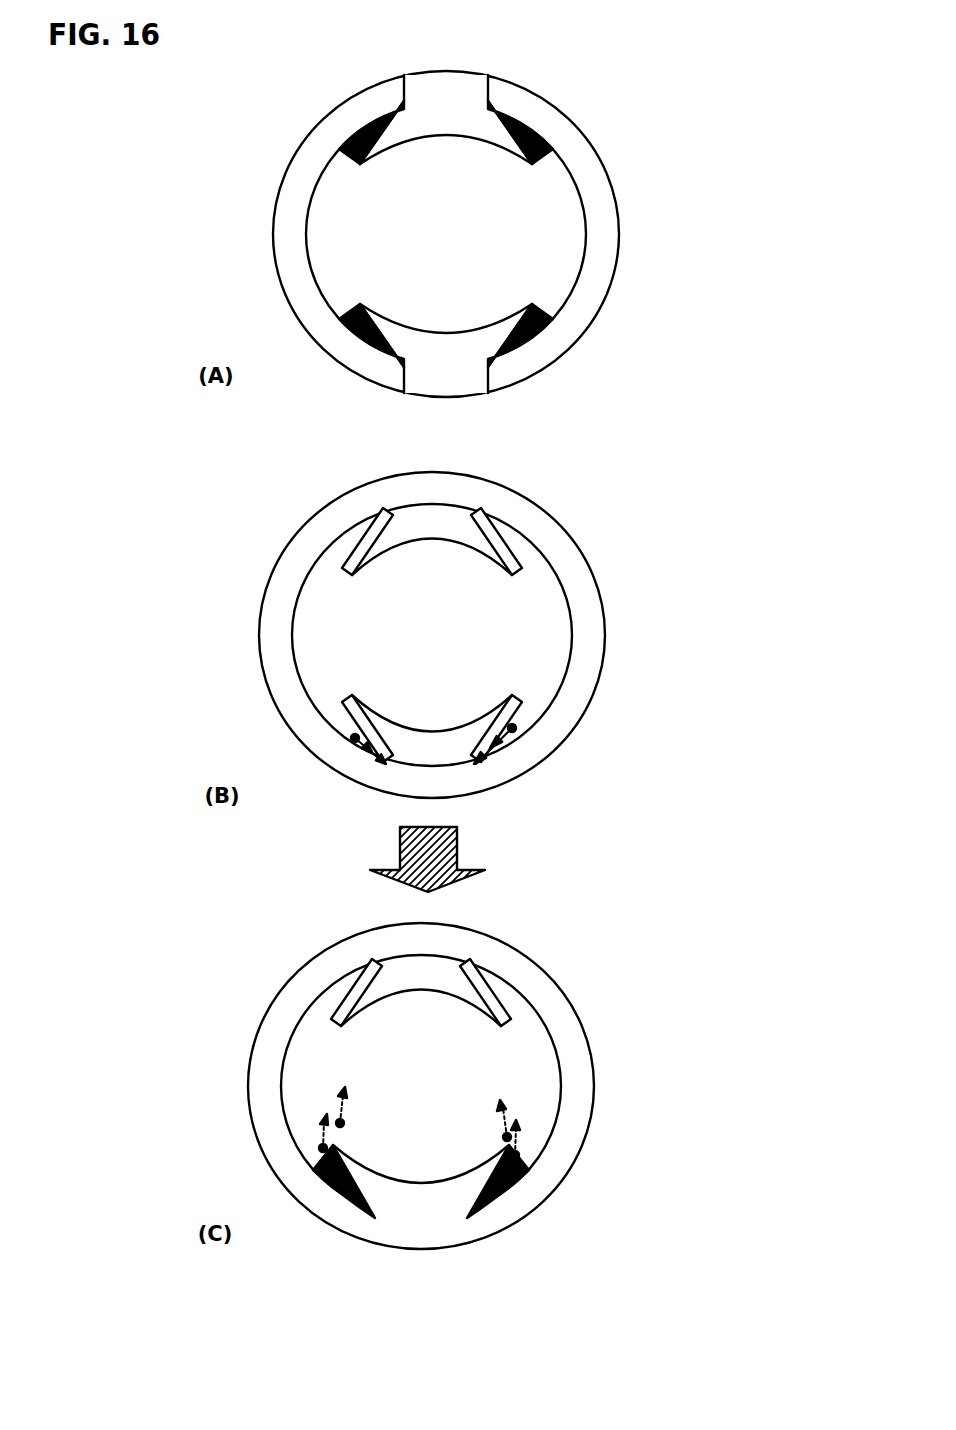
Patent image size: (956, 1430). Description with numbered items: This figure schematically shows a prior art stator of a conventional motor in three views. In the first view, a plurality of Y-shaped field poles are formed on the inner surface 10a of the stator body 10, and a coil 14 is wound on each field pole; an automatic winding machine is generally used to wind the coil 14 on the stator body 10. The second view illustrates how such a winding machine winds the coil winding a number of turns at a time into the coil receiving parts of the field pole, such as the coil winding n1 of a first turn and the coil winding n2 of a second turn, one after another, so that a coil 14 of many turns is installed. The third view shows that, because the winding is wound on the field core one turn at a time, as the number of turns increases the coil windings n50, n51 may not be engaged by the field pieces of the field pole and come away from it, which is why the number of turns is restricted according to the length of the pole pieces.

The stator body 10 is at (575, 132).
The inner surface 10a is at (575, 196).
The coil 14 is at (488, 75).
The coil winding of a first turn n1 is at (380, 762).
The coil winding of a second turn n2 is at (355, 738).
The coil winding n50 is at (323, 1150).
The coil winding n51 is at (340, 1123).